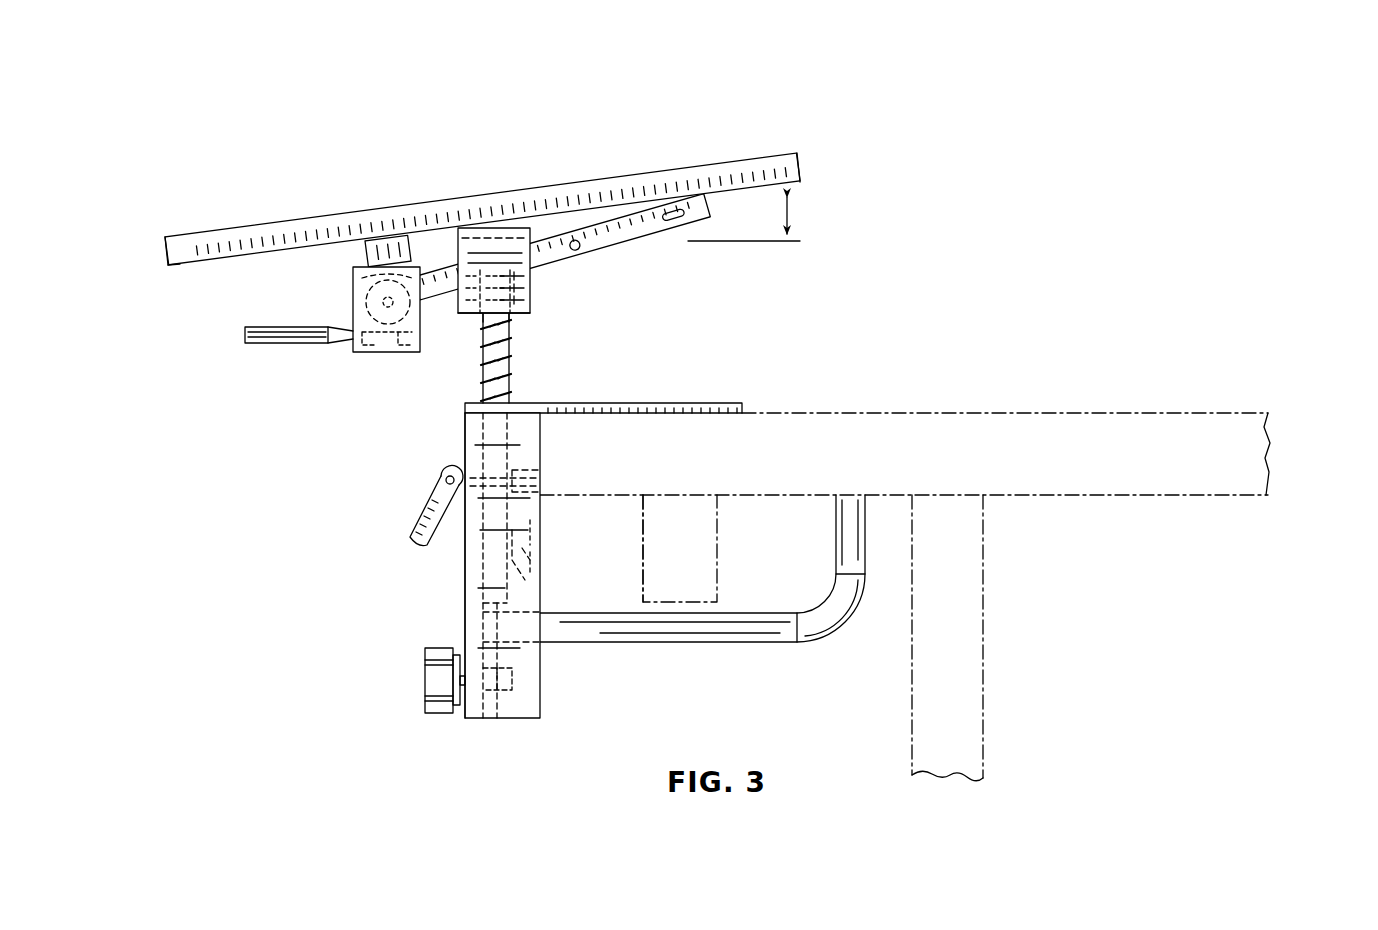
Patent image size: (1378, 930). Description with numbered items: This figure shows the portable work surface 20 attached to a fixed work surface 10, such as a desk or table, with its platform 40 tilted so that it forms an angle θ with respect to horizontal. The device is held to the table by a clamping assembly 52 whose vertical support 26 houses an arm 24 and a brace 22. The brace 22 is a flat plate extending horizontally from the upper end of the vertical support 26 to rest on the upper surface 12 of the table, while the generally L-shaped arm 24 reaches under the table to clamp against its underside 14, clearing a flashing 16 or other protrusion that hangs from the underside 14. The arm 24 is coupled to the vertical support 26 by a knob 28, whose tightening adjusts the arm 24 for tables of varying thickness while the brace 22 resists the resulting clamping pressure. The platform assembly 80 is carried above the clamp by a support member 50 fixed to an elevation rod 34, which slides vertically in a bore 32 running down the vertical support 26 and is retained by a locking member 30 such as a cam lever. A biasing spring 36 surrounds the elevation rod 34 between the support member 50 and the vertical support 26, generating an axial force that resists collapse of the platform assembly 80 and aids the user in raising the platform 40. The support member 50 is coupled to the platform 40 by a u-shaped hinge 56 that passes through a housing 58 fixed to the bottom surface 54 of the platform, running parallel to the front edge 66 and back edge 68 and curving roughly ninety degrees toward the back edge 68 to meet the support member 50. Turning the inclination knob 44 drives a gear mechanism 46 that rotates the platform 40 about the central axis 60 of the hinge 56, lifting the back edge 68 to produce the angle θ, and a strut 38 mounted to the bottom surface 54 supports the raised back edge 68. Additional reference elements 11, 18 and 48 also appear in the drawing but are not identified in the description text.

The fixed work surface 10 is at (1263, 460).
The clamp body edge 11 is at (541, 432).
The upper surface 12 is at (872, 413).
The underside 14 is at (730, 497).
The flashing 16 is at (641, 527).
The table leg 18 is at (985, 590).
The portable work surface 20 is at (146, 157).
The brace 22 is at (700, 410).
The arm 24 is at (748, 642).
The vertical support 26 is at (465, 575).
The knob 28 is at (424, 676).
The locking member 30 is at (432, 500).
The bore 32 is at (540, 578).
The elevation rod 34 is at (510, 318).
The biasing spring 36 is at (478, 362).
The strut 38 is at (625, 232).
The platform 40 is at (233, 228).
The inclination knob 44 is at (255, 346).
The gear mechanism 46 is at (248, 293).
The slider block bottom 48 is at (530, 312).
The support member 50 is at (515, 228).
The clamping assembly 52 is at (333, 711).
The bottom surface 54 is at (176, 268).
The u-shaped hinge 56 is at (445, 265).
The housing 58 is at (380, 240).
The central axis 60 is at (358, 266).
The front edge 66 is at (163, 250).
The back edge 68 is at (800, 165).
The platform assembly 80 is at (944, 202).